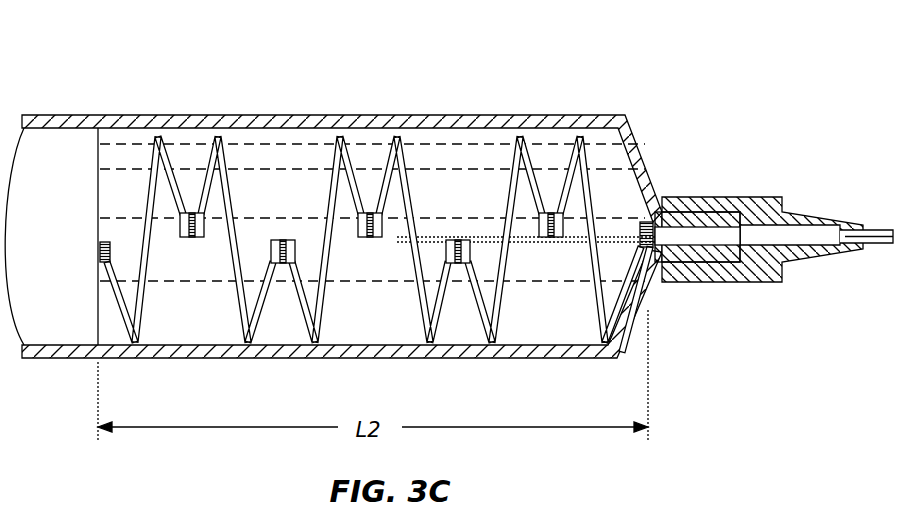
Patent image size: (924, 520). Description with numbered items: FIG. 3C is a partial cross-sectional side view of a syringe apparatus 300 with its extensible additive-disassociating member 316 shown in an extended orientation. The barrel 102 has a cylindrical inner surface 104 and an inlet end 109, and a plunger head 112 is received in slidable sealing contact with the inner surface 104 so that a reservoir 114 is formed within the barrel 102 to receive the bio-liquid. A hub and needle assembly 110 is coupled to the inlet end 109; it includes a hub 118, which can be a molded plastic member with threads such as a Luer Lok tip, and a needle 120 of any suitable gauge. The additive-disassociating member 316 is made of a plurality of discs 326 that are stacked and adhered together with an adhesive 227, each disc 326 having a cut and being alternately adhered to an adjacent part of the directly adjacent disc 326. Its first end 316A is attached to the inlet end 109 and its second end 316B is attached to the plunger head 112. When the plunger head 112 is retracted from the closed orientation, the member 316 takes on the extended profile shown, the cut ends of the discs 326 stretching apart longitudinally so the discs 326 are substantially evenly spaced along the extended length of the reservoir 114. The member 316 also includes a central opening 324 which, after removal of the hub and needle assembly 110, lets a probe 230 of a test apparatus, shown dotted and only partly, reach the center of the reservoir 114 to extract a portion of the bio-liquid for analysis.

The barrel 102 is at (69, 108).
The inner surface 104 is at (280, 128).
The plunger head 112 is at (72, 245).
The reservoir 114 is at (467, 168).
The central opening 324 is at (515, 215).
The extensible additive-disassociating member 316 is at (329, 130).
The first end 316A is at (650, 210).
The second end 316B is at (110, 238).
The adhesive 227 is at (97, 252).
The discs 326 is at (160, 358).
The hub and needle assembly 110 is at (774, 249).
The hub 118 is at (713, 197).
The probe 230 is at (735, 264).
The needle 120 is at (876, 230).
The inlet end 109 is at (690, 292).
The device 300 is at (606, 74).